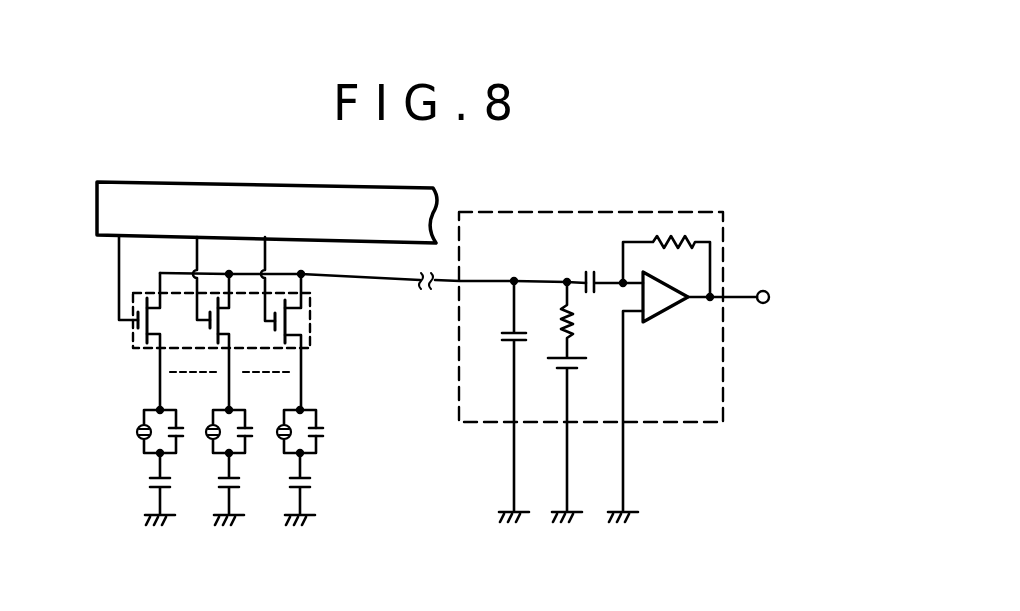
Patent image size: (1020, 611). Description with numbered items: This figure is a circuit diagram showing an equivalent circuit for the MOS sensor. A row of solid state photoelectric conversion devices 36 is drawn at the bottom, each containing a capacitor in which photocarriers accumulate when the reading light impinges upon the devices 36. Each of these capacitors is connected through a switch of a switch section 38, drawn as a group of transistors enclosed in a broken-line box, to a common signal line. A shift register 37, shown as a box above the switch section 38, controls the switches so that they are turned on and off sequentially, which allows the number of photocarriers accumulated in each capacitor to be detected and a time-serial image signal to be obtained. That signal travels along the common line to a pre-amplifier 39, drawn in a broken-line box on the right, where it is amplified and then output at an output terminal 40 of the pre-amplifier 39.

The solid state photoelectric conversion device 36 is at (131, 459).
The shift register 37 is at (108, 241).
The switch section 38 is at (133, 341).
The pre-amplifier 39 is at (670, 422).
The output terminal 40 is at (770, 296).